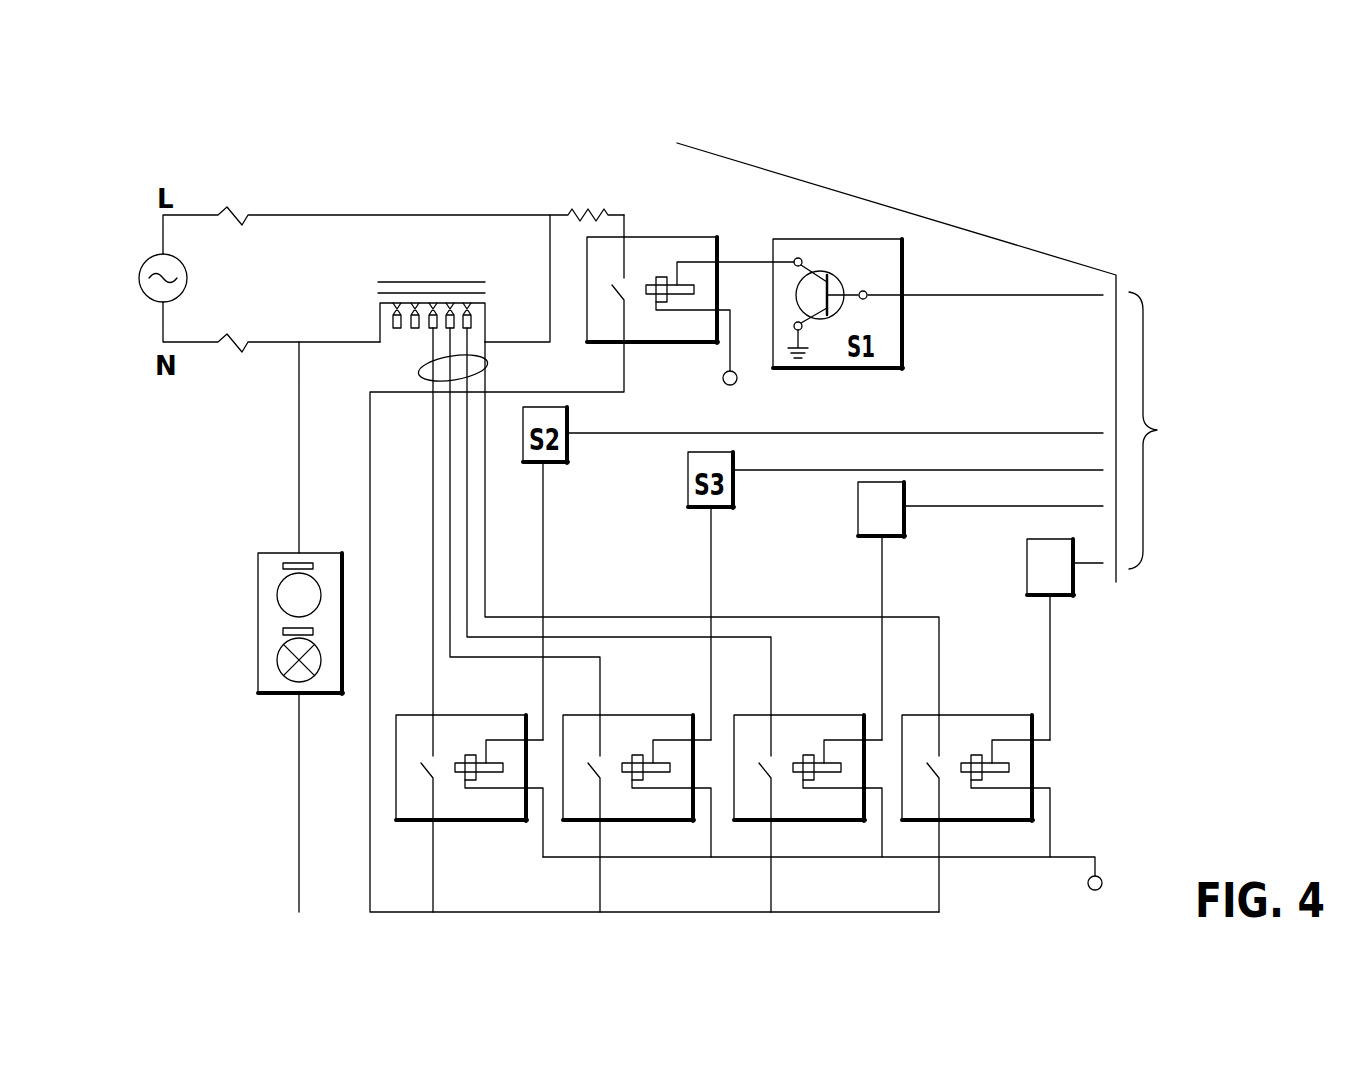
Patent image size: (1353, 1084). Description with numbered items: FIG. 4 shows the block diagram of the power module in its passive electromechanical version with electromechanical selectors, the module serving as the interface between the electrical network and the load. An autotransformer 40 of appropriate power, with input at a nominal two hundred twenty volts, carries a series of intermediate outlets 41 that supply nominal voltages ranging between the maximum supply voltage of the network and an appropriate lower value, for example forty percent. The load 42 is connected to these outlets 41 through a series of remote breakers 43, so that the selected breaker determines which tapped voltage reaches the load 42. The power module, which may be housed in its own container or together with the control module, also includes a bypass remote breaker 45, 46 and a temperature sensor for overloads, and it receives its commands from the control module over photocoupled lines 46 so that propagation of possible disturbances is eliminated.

The autotransformer 40 is at (393, 280).
The intermediate outlets 41 is at (447, 366).
The load 42 is at (258, 643).
The remote breakers 43 is at (455, 715).
The bypass remote breaker 45 is at (881, 362).
The bypass remote breaker 46 is at (668, 237).